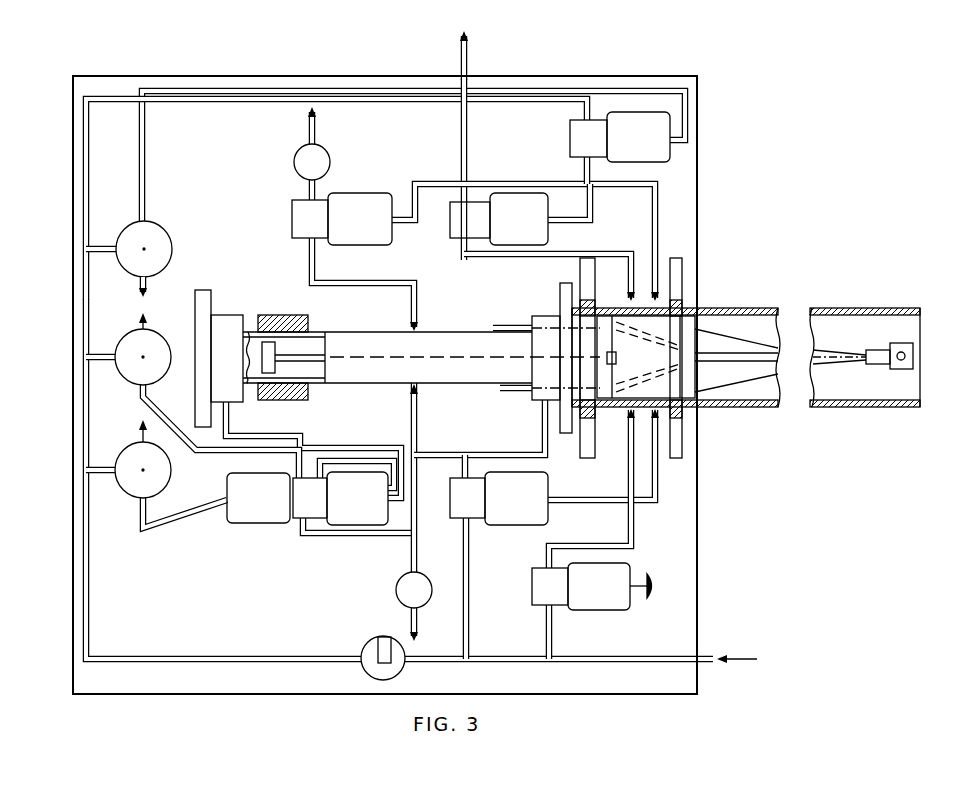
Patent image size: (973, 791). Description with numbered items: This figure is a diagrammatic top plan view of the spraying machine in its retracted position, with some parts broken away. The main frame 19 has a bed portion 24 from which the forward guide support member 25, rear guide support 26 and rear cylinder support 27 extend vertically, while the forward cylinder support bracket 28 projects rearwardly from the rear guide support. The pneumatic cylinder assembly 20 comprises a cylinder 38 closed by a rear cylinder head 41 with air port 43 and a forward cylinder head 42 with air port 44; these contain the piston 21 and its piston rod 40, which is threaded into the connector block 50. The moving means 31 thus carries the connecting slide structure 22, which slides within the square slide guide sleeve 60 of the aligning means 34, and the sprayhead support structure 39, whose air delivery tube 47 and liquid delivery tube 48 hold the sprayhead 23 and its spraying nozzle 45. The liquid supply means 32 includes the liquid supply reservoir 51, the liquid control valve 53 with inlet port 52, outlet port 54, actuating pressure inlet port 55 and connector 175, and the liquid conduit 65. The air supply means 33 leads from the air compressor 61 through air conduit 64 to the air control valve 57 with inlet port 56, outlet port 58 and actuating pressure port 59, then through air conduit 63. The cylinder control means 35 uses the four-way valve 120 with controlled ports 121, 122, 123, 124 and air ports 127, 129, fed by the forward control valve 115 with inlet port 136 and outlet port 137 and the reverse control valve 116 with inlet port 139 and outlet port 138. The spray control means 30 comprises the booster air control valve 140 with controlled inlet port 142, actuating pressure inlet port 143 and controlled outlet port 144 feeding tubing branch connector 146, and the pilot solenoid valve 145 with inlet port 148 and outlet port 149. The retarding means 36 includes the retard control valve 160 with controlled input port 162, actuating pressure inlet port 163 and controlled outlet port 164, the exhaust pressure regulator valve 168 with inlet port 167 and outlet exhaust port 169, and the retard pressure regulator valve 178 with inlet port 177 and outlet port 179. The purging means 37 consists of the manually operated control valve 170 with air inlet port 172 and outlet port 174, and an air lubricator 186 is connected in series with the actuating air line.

The main frame 19 is at (698, 203).
The pneumatic cylinder assembly 20 is at (425, 332).
The piston 21 is at (264, 350).
The connecting slide structure 22 is at (697, 386).
The sprayhead 23 is at (876, 365).
The bed portion 24 is at (699, 560).
The forward guide support member 25 is at (676, 258).
The rear guide support 26 is at (593, 300).
The rear cylinder support 27 is at (203, 290).
The forward cylinder support bracket 28 is at (568, 434).
The means for controlling the output spray 30 is at (656, 164).
The means for moving the sprayhead 31 is at (528, 402).
The means for supplying liquid to the sprayhead 32 is at (461, 123).
The means for supplying air under pressure to the sprayhead 33 is at (536, 661).
The means for aligning the sprayhead 34 is at (868, 312).
The means for controlling the cylinder air supply 35 is at (223, 516).
The means for retarding the piston movement 36 is at (369, 193).
The means for purging the liquid conduit 37 is at (632, 564).
The cylinder 38 is at (356, 331).
The sprayhead support structure 39 is at (826, 351).
The piston rod 40 is at (305, 352).
The rear cylinder head 41 is at (227, 314).
The forward cylinder head 42 is at (545, 316).
The air port 43 is at (226, 403).
The air port 44 is at (540, 404).
The spraying nozzle 45 is at (906, 359).
The air delivery tube 47 is at (794, 383).
The liquid delivery tube 48 is at (790, 326).
The connector block 50 is at (700, 332).
The liquid supply reservoir 51 is at (461, 62).
The inlet port 52 is at (462, 202).
The liquid control valve 53 is at (450, 223).
The outlet port 54 is at (458, 239).
The actuating pressure inlet port 55 is at (550, 221).
The inlet port 56 is at (465, 519).
The air control valve 57 is at (450, 503).
The outlet port 58 is at (461, 475).
The actuating pressure port 59 is at (551, 478).
The slide guide sleeve 60 is at (704, 311).
The air compressor 61 is at (705, 664).
The air conduit 63 is at (498, 393).
The air conduit 64 is at (470, 636).
The liquid conduit 65 is at (461, 262).
The forward control valve 115 is at (123, 485).
The reverse control valve 116 is at (130, 372).
The four-way valve 120 is at (249, 524).
The controlled port 121 is at (297, 521).
The controlled port 122 is at (319, 474).
The controlled port 123 is at (297, 472).
The controlled port 124 is at (318, 520).
The air port 127 is at (226, 497).
The air port 129 is at (390, 500).
The inlet port 136 is at (118, 462).
The outlet port 137 is at (142, 500).
The outlet port 138 is at (150, 386).
The inlet port 139 is at (118, 350).
The booster air control valve 140 is at (570, 138).
The controlled inlet port 142 is at (589, 120).
The actuating pressure inlet port 143 is at (697, 147).
The controlled outlet port 144 is at (585, 163).
The pilot solenoid valve 145 is at (137, 270).
The tubing branch connector 146 is at (593, 186).
The inlet port 148 is at (117, 247).
The outlet port 149 is at (148, 222).
The retard control valve 160 is at (292, 213).
The controlled input port 162 is at (312, 240).
The actuating pressure inlet port 163 is at (391, 217).
The controlled outlet port 164 is at (316, 198).
The inlet port 167 is at (310, 181).
The exhaust pressure regulator valve 168 is at (326, 150).
The outlet exhaust port 169 is at (309, 138).
The control valve 170 is at (532, 582).
The air inlet port 172 is at (546, 601).
The outlet port 174 is at (545, 568).
The connector 175 is at (470, 256).
The inlet port 177 is at (418, 572).
The retard pressure regulator valve 178 is at (396, 598).
The outlet port 179 is at (418, 611).
The air lubricator 186 is at (406, 667).